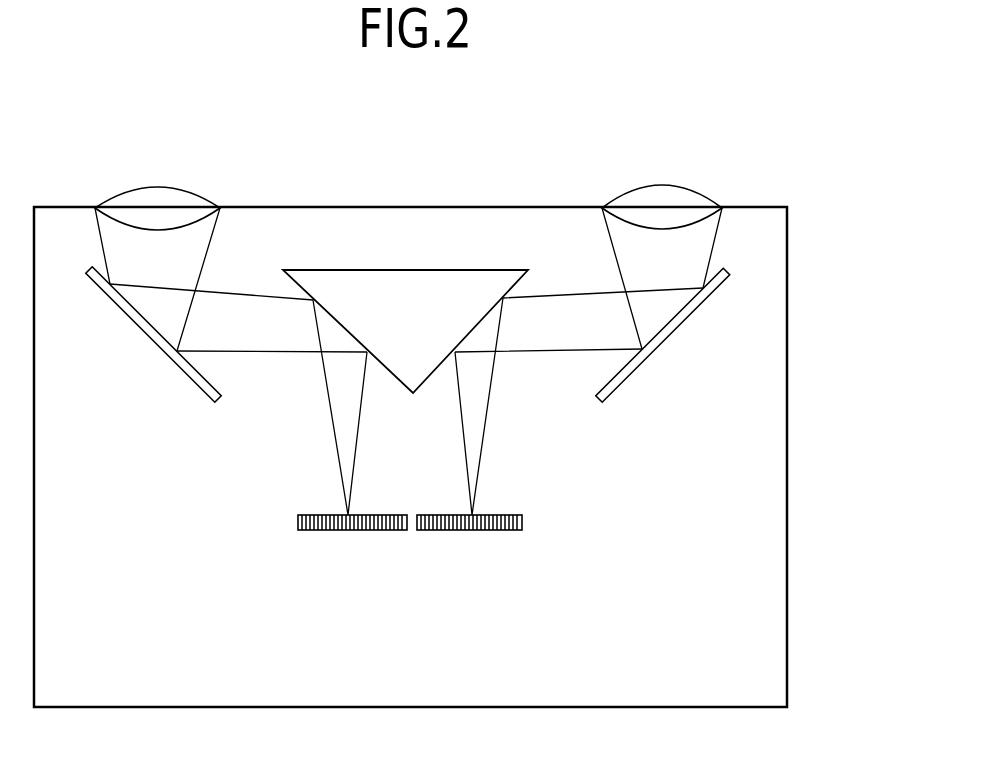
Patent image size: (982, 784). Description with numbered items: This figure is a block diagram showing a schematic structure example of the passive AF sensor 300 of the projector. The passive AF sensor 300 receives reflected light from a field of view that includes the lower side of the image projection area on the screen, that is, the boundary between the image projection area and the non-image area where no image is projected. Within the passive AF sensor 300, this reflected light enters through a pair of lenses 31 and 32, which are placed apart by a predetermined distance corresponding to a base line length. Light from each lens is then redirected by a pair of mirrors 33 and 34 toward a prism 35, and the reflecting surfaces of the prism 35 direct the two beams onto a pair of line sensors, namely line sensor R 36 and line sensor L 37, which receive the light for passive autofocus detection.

The passive AF sensor 300 is at (787, 430).
The lens 31 is at (183, 195).
The lens 32 is at (670, 190).
The mirror 33 is at (155, 348).
The mirror 34 is at (637, 373).
The prism 35 is at (415, 280).
The line sensor R 36 is at (335, 530).
The line sensor L 37 is at (470, 530).